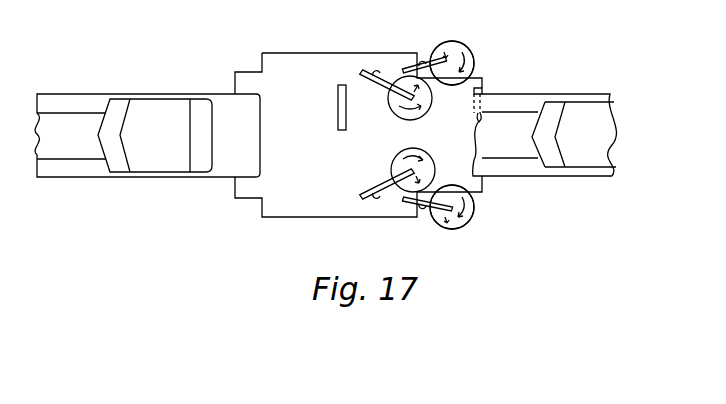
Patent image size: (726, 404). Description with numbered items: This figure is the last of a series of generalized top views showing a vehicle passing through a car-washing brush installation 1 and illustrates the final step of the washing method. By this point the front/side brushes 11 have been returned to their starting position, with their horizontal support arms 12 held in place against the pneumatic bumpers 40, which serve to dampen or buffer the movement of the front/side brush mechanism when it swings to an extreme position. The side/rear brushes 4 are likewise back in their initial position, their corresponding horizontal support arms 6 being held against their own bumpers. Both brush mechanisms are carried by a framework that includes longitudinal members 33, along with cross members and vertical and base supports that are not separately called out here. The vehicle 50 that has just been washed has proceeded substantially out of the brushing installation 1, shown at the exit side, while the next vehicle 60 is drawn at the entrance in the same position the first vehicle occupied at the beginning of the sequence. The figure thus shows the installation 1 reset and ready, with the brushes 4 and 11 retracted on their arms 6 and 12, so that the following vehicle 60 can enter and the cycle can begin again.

The brush installation 1 is at (289, 83).
The side/rear brushes 4 is at (473, 56).
The horizontal support arms 6 is at (437, 46).
The front/side brushes 11 is at (394, 158).
The horizontal support arms 12 is at (388, 87).
The longitudinal members 33 is at (423, 63).
The pneumatic bumper 40 is at (376, 72).
The vehicle 50 is at (173, 148).
The next vehicle 60 is at (596, 147).